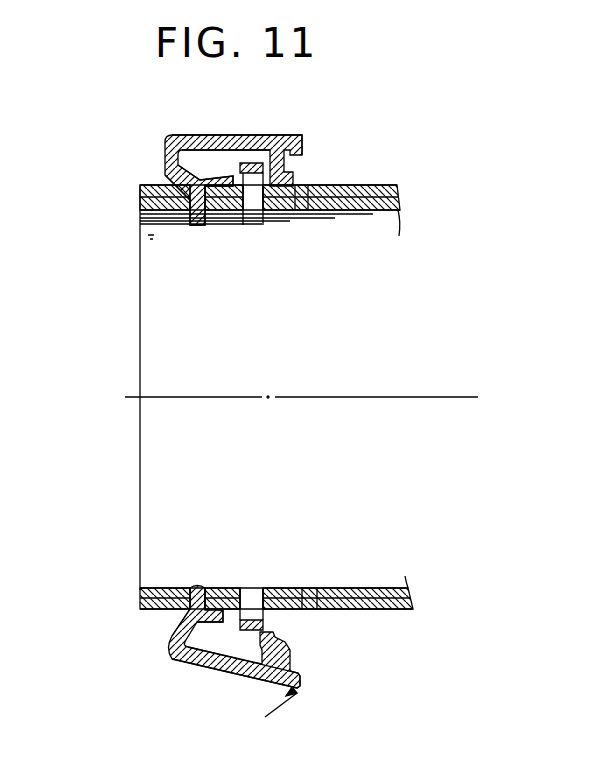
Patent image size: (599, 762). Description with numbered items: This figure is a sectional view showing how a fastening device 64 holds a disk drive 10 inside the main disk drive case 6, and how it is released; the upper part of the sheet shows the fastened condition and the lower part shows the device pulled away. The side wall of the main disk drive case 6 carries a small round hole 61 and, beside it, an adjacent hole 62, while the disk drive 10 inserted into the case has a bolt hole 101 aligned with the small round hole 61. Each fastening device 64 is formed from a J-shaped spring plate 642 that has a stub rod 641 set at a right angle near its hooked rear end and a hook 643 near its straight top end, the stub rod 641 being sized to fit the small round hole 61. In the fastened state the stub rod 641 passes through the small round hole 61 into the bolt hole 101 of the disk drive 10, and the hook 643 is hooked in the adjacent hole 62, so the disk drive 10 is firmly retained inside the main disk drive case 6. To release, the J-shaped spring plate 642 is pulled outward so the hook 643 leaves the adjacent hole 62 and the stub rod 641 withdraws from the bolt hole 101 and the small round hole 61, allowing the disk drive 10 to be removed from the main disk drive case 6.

The main disk drive case 6 is at (150, 185).
The disk drive 10 is at (150, 228).
The small round hole 61 is at (140, 191).
The adjacent hole 62 is at (223, 165).
The fastening device 64 is at (168, 148).
The bolt hole 101 is at (208, 212).
The stub rod 641 is at (190, 205).
The J-shaped spring plate 642 is at (230, 143).
The hook 643 is at (263, 220).